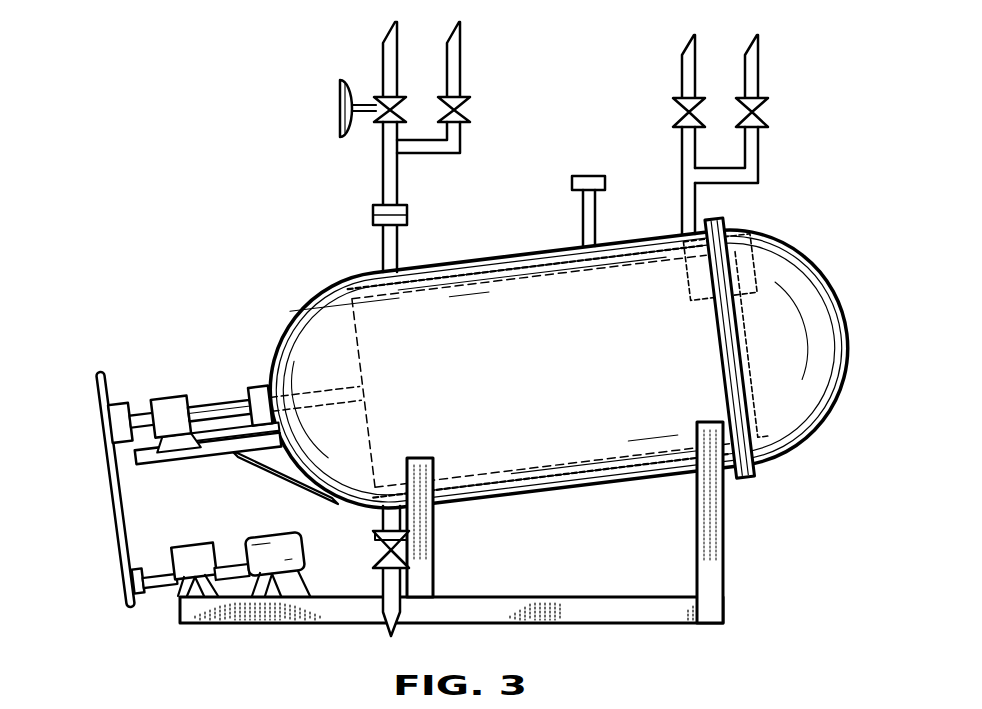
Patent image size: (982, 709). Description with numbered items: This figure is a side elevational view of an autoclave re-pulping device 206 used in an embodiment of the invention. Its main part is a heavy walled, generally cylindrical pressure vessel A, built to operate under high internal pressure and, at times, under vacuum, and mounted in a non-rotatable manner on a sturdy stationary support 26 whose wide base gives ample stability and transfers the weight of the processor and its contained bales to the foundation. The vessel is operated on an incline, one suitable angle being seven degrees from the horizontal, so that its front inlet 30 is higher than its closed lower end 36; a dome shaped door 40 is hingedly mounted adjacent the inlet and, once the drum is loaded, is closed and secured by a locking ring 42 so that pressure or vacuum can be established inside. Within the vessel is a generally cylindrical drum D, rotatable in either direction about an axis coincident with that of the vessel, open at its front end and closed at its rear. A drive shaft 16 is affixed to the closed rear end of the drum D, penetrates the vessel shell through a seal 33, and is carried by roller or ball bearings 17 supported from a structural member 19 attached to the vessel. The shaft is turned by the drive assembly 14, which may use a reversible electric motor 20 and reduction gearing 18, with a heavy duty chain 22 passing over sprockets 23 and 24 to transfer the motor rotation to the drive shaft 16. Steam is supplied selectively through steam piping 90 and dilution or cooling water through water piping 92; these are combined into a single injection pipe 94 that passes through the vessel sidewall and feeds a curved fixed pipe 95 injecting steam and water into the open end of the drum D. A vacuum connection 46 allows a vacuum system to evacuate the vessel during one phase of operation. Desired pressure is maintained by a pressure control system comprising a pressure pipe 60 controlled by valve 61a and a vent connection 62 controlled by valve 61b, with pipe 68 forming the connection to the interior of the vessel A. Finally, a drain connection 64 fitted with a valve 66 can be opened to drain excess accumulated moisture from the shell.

The drive assembly 14 is at (220, 632).
The drive shaft 16 is at (220, 405).
The roller or ball bearings 17 is at (172, 398).
The reduction gearing 18 is at (202, 545).
The structural member 19 is at (173, 456).
The reversible electric motor 20 is at (283, 538).
The heavy duty chain 22 is at (110, 520).
The sprocket 23 is at (120, 585).
The sprocket 24 is at (100, 418).
The stationary support 26 is at (713, 583).
The inlet 30 is at (727, 474).
The seal 33 is at (263, 387).
The closed lower end 36 is at (347, 484).
The dome shaped door 40 is at (820, 268).
The locking ring 42 is at (757, 468).
The vacuum connection 46 is at (580, 213).
The pressure pipe 60 is at (382, 132).
The valve 61a is at (382, 97).
The valve 61b is at (462, 97).
The vent connection 62 is at (455, 137).
The drain connection 64 is at (396, 518).
The valve 66 is at (406, 555).
The pipe 68 is at (401, 243).
The steam piping 90 is at (758, 148).
The water piping 92 is at (682, 149).
The injection pipe 94 is at (682, 216).
The curved fixed pipe 95 is at (765, 238).
The treatment system 206 is at (166, 269).
The pressure vessel A is at (357, 272).
The drum D is at (537, 272).